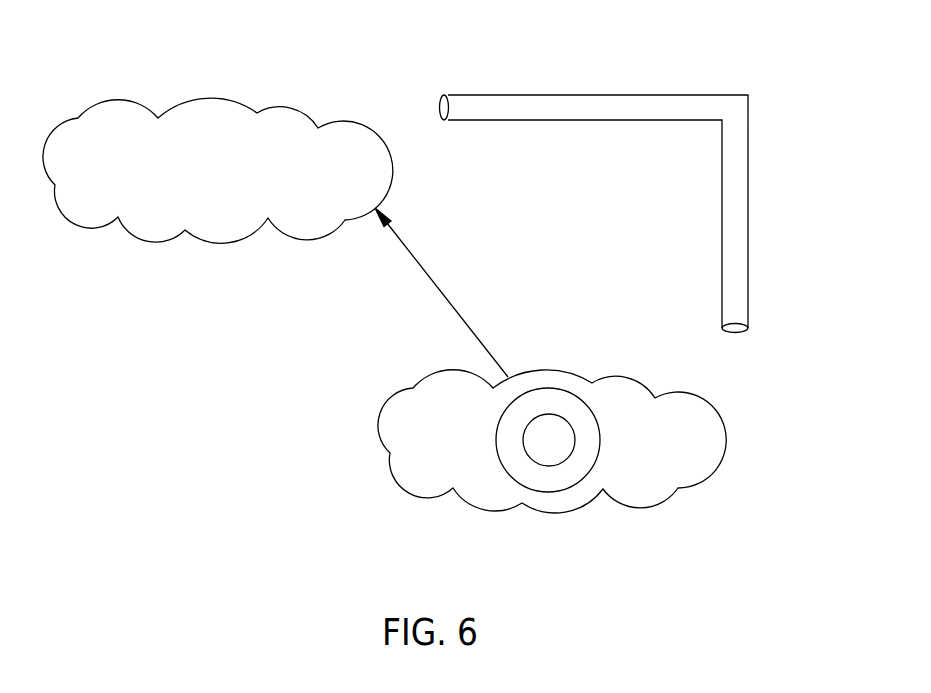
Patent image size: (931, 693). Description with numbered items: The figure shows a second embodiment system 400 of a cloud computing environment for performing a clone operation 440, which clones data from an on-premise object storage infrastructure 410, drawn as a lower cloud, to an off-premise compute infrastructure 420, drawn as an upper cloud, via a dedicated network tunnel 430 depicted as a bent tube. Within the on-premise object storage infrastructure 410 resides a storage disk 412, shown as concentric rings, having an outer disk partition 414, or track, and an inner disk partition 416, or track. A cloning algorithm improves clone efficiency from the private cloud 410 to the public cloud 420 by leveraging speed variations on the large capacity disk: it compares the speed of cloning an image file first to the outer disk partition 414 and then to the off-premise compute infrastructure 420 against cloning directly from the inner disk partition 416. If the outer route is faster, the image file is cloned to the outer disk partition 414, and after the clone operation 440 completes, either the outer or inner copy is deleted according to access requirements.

The second embodiment system 400 is at (822, 38).
The on-premise object storage infrastructure 410 is at (378, 423).
The storage disk 412 is at (497, 438).
The outer disk partition 414 is at (587, 440).
The inner disk partition 416 is at (552, 453).
The off-premise compute infrastructure 420 is at (240, 184).
The dedicated network tunnel 430 is at (748, 177).
The clone operation 440 is at (454, 311).